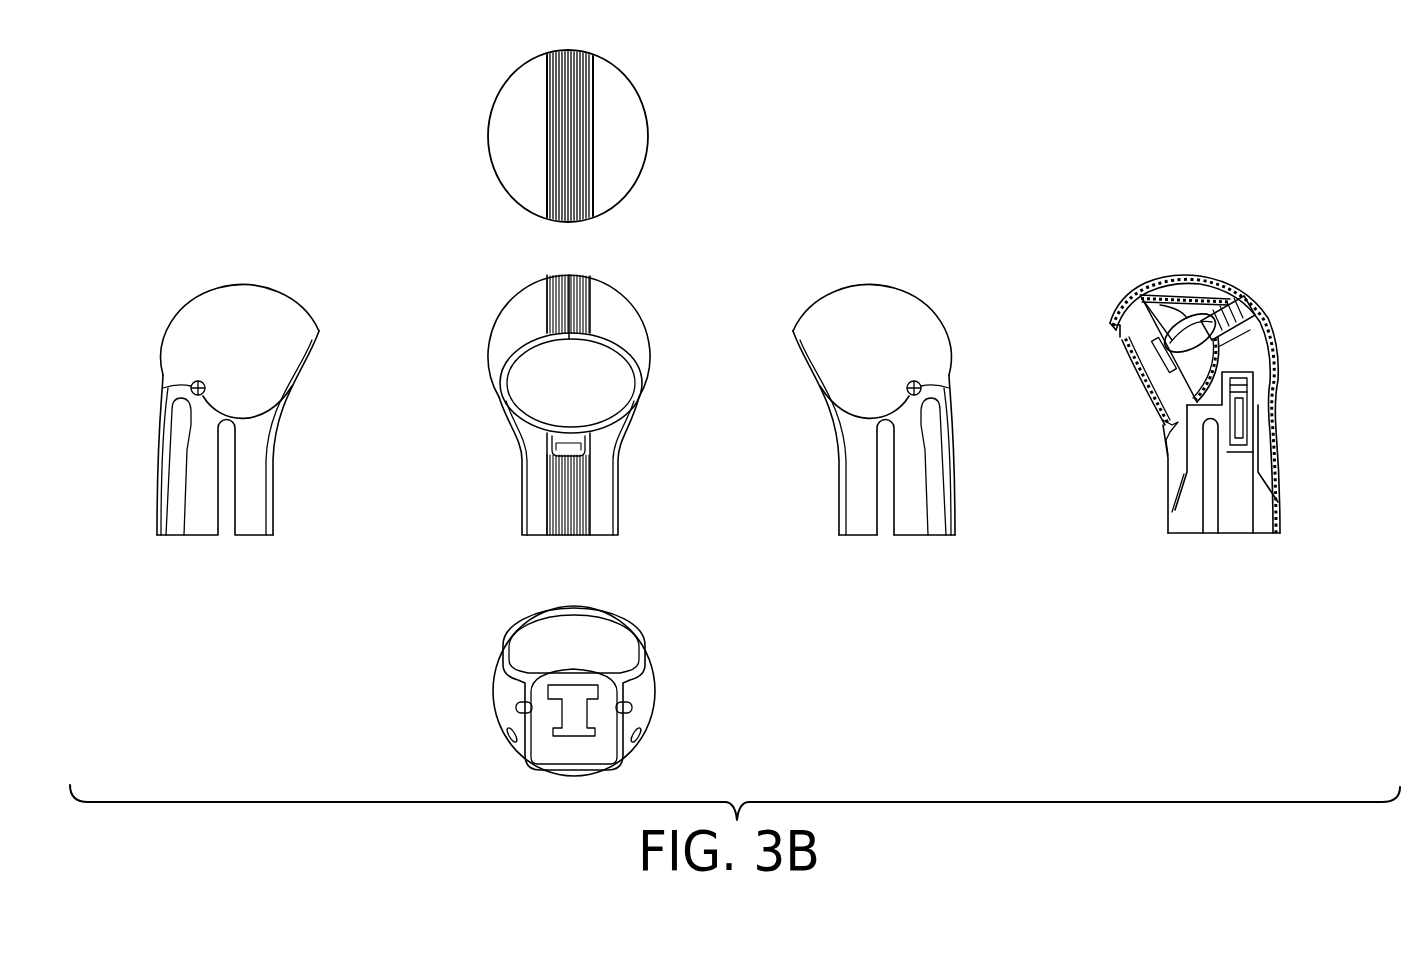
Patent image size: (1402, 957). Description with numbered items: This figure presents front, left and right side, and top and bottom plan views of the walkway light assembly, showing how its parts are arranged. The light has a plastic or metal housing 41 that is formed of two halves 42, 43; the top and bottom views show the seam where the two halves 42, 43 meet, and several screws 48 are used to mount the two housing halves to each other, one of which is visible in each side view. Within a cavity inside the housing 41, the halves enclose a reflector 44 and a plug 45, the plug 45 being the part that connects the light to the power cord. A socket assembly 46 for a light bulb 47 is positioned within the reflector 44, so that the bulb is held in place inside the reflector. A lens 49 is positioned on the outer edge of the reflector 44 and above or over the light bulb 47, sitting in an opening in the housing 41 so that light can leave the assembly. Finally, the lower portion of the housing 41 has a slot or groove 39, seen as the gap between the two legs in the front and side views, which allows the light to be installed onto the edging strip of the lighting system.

The slot or groove 39 is at (884, 525).
The housing 41 is at (173, 335).
The housing half 42 is at (505, 150).
The housing half 43 is at (620, 152).
The reflector 44 is at (1184, 300).
The plug 45 is at (1240, 410).
The socket assembly 46 is at (1238, 300).
The light bulb 47 is at (1140, 296).
The screws 48 is at (919, 385).
The lens 49 is at (1135, 373).